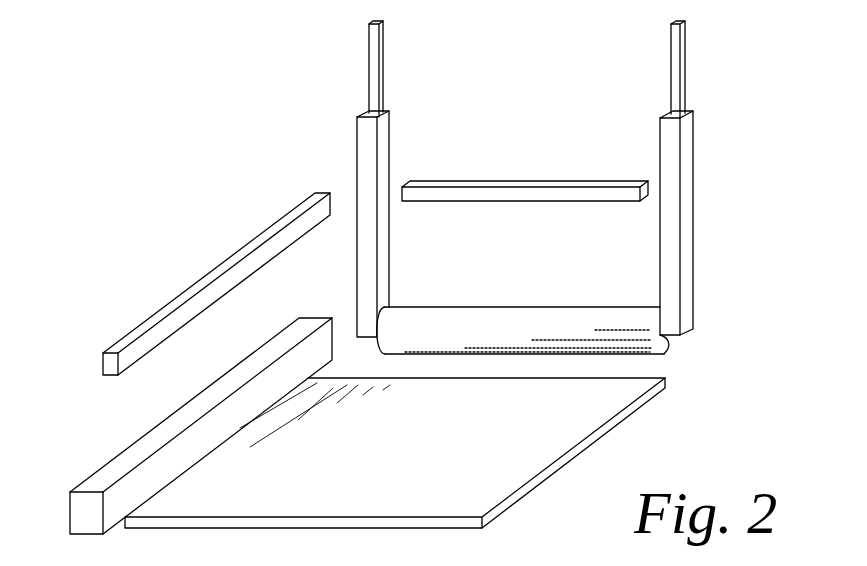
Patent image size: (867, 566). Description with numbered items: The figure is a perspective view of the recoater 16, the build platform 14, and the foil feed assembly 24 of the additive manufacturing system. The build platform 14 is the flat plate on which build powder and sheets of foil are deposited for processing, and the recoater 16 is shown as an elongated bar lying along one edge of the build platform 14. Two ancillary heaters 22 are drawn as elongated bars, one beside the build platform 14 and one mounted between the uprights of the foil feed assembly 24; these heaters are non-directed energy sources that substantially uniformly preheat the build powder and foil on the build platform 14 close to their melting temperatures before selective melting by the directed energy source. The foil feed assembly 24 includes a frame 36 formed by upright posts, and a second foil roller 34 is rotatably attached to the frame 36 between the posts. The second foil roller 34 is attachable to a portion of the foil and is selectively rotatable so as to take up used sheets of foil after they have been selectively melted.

The build platform 14 is at (592, 415).
The recoater 16 is at (90, 481).
The ancillary heaters 22 is at (452, 182).
The foil feed assembly 24 is at (690, 108).
The second foil roller 34 is at (515, 320).
The frame 36 is at (693, 232).